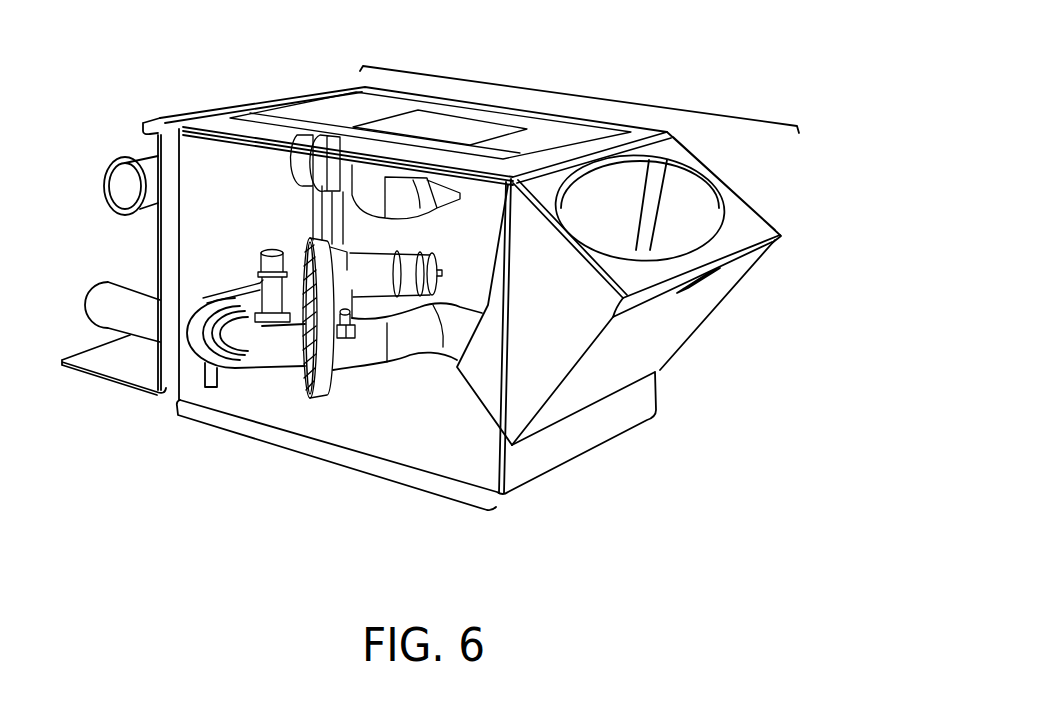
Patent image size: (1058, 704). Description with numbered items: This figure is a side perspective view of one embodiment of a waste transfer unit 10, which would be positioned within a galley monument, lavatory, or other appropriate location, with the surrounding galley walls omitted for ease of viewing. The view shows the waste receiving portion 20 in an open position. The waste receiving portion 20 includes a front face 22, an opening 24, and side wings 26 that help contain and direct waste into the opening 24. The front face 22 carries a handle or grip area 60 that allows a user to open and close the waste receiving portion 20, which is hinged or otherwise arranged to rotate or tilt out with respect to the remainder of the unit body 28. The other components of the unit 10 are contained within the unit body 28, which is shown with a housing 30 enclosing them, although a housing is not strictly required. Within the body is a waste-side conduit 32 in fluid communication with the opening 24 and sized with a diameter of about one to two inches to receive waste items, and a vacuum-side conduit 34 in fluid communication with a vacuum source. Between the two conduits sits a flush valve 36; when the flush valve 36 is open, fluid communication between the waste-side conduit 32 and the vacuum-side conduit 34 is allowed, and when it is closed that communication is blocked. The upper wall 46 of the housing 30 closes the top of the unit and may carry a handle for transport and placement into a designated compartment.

The waste transfer unit 10 is at (579, 96).
The waste receiving portion 20 is at (528, 335).
The front face 22 is at (658, 343).
The opening 24 is at (650, 232).
The side wings 26 is at (568, 312).
The unit body 28 is at (321, 458).
The housing 30 is at (450, 108).
The waste-side conduit 32 is at (407, 333).
The vacuum-side conduit 34 is at (253, 350).
The flush valve 36 is at (323, 278).
The upper wall 46 is at (318, 112).
The handle or grip area 60 is at (710, 280).